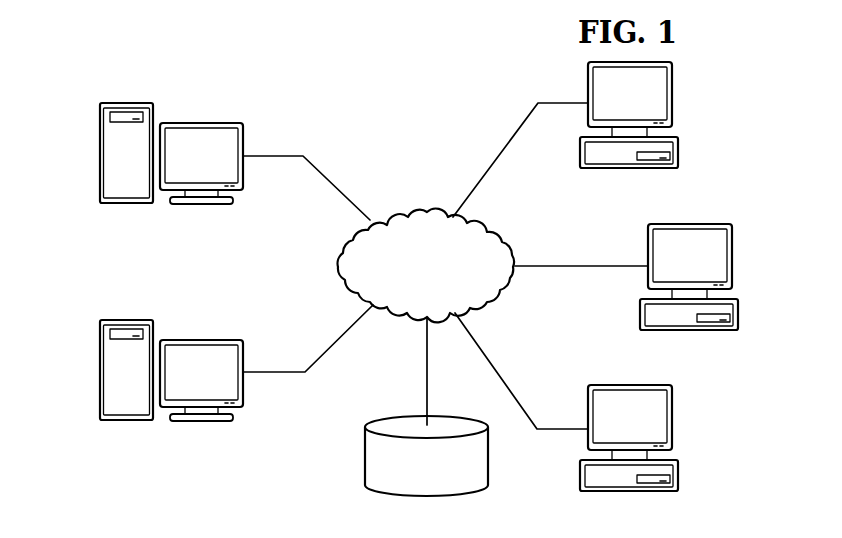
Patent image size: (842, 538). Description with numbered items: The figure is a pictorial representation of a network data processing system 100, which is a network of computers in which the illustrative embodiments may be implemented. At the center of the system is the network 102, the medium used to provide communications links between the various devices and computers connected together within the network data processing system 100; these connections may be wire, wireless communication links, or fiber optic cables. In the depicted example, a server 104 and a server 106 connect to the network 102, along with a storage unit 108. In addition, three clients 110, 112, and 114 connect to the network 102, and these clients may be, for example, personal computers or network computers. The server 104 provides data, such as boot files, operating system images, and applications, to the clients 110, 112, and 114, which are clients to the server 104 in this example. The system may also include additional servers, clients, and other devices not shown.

The network data processing system 100 is at (305, 66).
The network 102 is at (413, 210).
The server 104 is at (100, 150).
The server 106 is at (100, 368).
The storage unit 108 is at (365, 457).
The client 110 is at (680, 155).
The client 112 is at (741, 318).
The client 114 is at (680, 476).